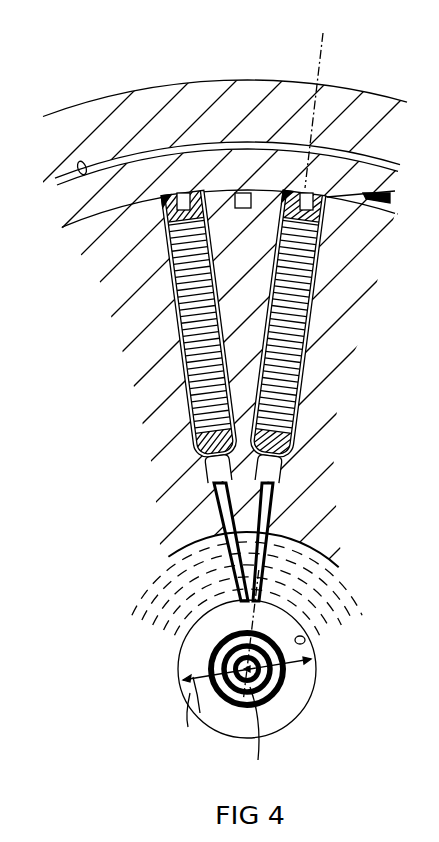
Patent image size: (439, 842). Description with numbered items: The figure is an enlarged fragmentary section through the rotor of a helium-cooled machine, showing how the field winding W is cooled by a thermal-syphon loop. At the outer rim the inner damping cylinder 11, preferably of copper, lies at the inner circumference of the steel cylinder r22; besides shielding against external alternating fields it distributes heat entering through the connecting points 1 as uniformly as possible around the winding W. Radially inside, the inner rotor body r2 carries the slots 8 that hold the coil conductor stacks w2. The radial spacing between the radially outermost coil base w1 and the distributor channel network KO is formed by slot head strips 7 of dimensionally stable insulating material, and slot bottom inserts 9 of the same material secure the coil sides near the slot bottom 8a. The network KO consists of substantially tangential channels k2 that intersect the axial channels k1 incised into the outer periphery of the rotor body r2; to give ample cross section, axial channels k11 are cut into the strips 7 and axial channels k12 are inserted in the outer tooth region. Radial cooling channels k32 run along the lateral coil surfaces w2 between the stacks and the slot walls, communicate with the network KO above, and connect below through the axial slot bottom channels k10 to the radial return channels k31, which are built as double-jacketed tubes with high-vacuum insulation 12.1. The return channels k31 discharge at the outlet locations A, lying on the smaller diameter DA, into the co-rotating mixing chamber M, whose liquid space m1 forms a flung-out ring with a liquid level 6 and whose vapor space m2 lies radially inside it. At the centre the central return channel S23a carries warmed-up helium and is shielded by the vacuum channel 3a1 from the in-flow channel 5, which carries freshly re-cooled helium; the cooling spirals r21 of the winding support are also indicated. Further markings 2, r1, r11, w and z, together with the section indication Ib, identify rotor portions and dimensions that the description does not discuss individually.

The connecting points 1 is at (86, 175).
The outer rim part 2 is at (123, 162).
The in-flow channel 5 is at (298, 698).
The liquid level 6 is at (305, 641).
The slot head strips 7 is at (327, 226).
The slots 8 is at (308, 322).
The slot bottom 8a is at (300, 452).
The slot bottom inserts 9 is at (300, 432).
The inner damping cylinder 11 is at (388, 196).
The high-vacuum insulation 12.1 is at (275, 517).
The vacuum channel 3a1 is at (275, 700).
The outlet locations A is at (267, 612).
The diameter of outlet locations DA is at (198, 712).
The section line Ib is at (322, 32).
The distributor channel network KO is at (395, 219).
The mixing chamber M is at (185, 625).
The central return channel S23a is at (257, 734).
The field winding W is at (80, 401).
The axial channels k1 is at (238, 194).
The axial slot bottom channels k10 is at (205, 470).
The axial channels in slot head strips k11 is at (178, 196).
The axial channels in tooth region k12 is at (300, 188).
The tangential channels k2 is at (129, 210).
The radial return channels k31 is at (216, 494).
The radial cooling channels k32 is at (171, 292).
The liquid space m1 is at (180, 592).
The vapor space m2 is at (190, 694).
The outer radius r1 is at (62, 122).
The outer radius r11 is at (258, 80).
The inner rotor body r2 is at (80, 238).
The cooling spirals r21 is at (364, 361).
The steel cylinder r22 is at (80, 199).
The left slot w is at (167, 268).
The radially outermost coil base w1 is at (318, 248).
The coil conductor stacks w2 is at (182, 366).
The web z is at (242, 233).